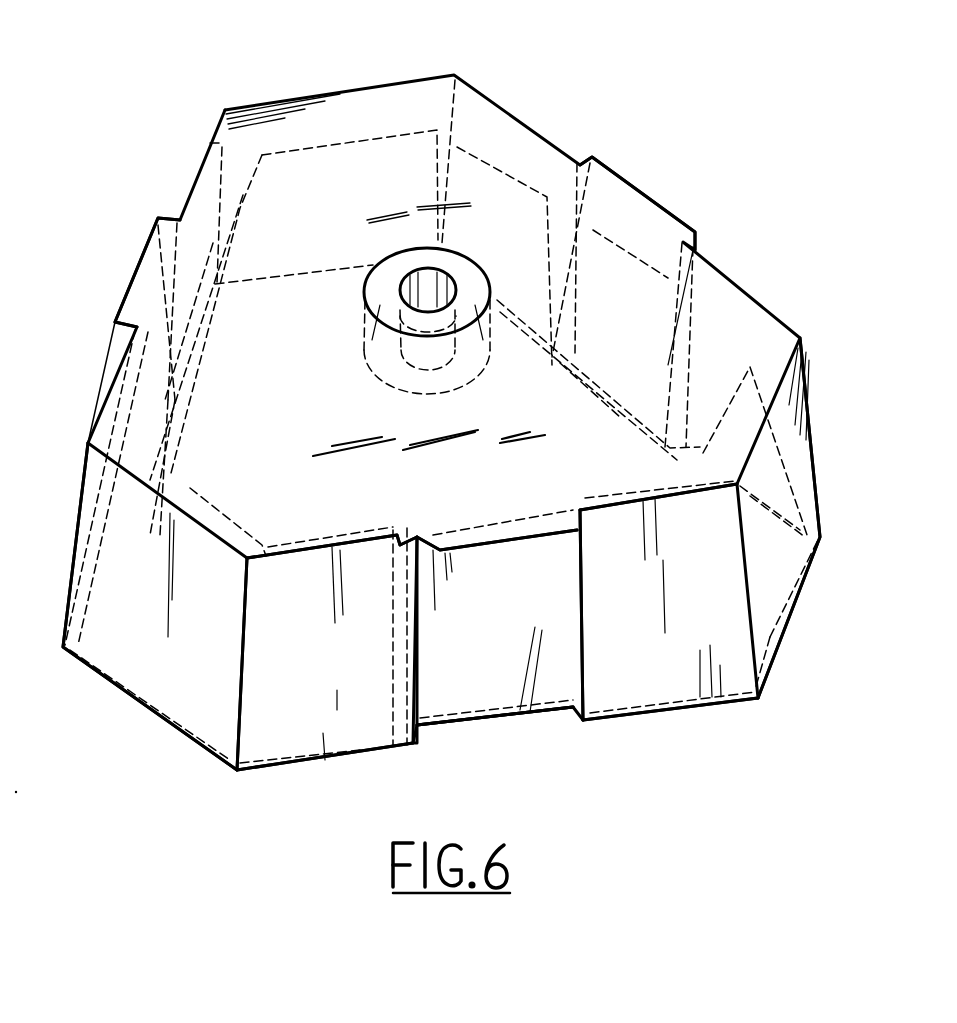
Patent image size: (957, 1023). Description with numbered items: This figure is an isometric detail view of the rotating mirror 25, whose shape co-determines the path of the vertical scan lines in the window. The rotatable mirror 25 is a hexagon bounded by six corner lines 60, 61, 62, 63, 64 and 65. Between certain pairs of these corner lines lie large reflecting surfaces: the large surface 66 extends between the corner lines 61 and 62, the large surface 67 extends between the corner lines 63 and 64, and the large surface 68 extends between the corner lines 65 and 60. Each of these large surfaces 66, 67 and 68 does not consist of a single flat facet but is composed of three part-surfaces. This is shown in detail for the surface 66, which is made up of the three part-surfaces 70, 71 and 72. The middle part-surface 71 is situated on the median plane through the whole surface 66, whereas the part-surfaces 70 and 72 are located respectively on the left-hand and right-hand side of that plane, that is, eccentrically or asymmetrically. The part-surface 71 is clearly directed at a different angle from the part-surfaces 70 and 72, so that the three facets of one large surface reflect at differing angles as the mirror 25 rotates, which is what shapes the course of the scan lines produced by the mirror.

The rotating mirror 25 is at (735, 105).
The corner line 60 is at (78, 510).
The corner line 61 is at (243, 617).
The corner line 62 is at (742, 577).
The corner line 63 is at (806, 392).
The corner line 64 is at (438, 250).
The corner line 65 is at (207, 167).
The large surface 66 is at (488, 735).
The large surface 67 is at (680, 199).
The large surface 68 is at (112, 288).
The part-surface 70 is at (350, 660).
The part-surface 71 is at (533, 620).
The part-surface 72 is at (660, 620).